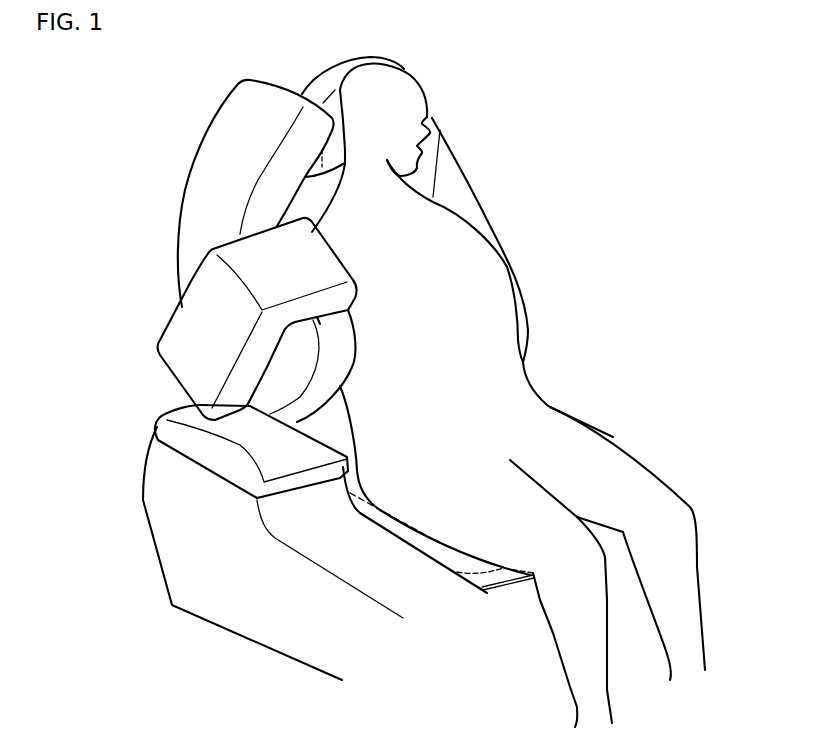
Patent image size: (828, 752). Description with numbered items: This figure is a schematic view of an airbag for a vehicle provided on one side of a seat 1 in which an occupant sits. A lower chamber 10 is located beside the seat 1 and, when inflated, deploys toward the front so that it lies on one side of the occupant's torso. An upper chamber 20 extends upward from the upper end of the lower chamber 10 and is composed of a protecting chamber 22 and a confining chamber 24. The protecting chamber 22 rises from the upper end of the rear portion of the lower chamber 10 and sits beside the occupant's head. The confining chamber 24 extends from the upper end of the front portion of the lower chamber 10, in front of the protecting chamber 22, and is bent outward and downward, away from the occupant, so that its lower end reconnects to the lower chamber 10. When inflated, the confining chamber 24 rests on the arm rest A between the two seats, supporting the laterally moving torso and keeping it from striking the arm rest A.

The seat 1 is at (453, 176).
The lower chamber 10 is at (337, 357).
The upper chamber 20 is at (97, 171).
The protecting chamber 22 is at (197, 175).
The confining chamber 24 is at (183, 316).
The arm rest A is at (245, 444).